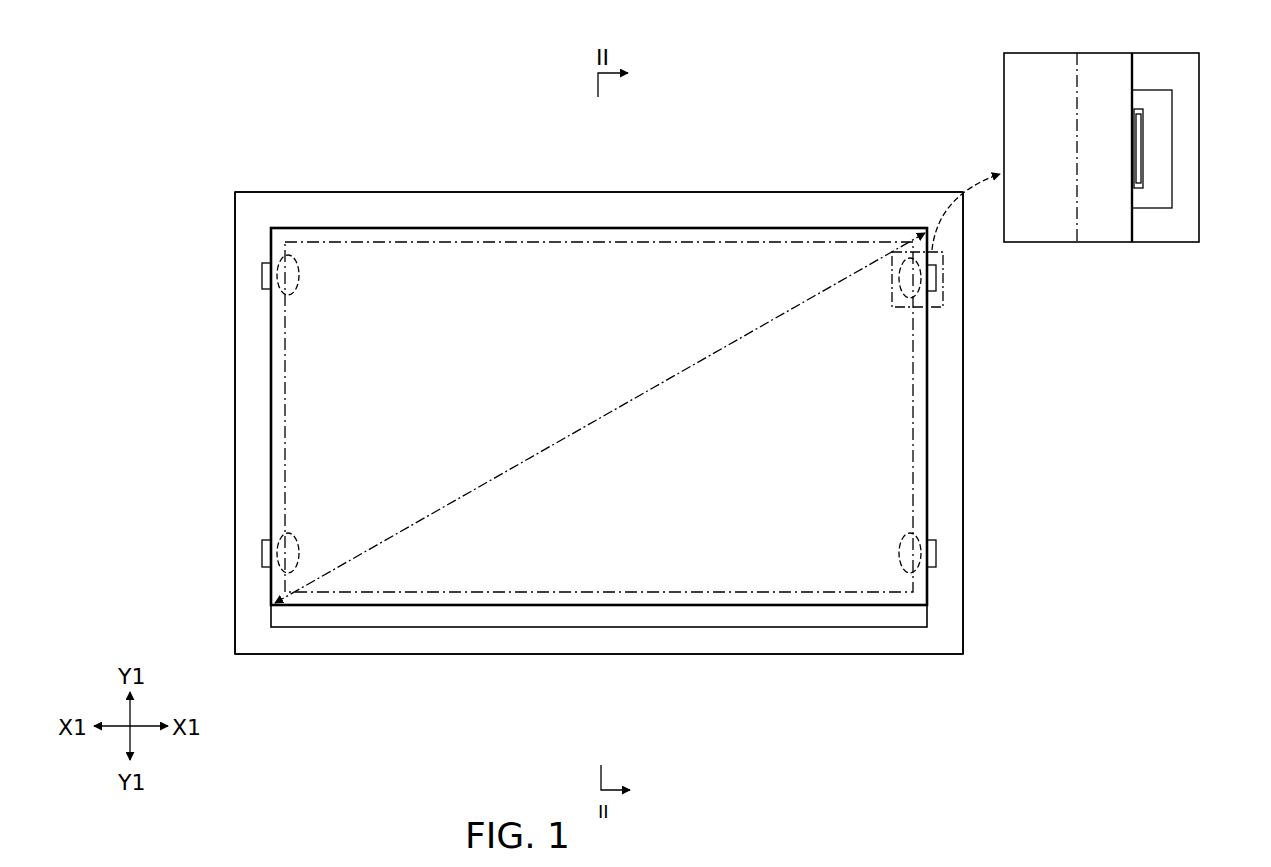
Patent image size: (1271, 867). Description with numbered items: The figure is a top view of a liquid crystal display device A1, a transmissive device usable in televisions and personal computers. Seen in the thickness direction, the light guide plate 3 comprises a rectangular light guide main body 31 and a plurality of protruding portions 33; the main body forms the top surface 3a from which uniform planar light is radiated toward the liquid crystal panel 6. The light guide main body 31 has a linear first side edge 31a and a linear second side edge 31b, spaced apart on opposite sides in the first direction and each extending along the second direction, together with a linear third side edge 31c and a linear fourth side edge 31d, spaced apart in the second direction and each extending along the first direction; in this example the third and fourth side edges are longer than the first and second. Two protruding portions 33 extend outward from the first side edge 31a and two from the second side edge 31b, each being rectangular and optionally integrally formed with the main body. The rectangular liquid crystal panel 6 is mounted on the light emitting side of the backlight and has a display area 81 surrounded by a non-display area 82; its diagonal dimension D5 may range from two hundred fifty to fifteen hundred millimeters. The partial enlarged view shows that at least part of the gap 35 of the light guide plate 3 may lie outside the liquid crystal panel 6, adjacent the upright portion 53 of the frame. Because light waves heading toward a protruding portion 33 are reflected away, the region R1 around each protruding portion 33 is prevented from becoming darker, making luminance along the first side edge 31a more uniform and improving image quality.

The liquid crystal display device A1 is at (195, 135).
The light guide plate 3 is at (345, 614).
The top surface 3a is at (500, 614).
The liquid crystal panel 6 is at (370, 262).
The light guide main body 31 is at (415, 614).
The first side edge 31a is at (928, 407).
The second side edge 31b is at (270, 413).
The third side edge 31c is at (678, 630).
The fourth side edge 31d is at (700, 228).
The protruding portion 33 is at (262, 276).
The gap 35 is at (1138, 190).
The upright portion 53 is at (1138, 128).
The display area 81 is at (524, 270).
The non-display area 82 is at (443, 236).
The diagonal dimension D5 is at (600, 418).
The region R1 is at (290, 292).